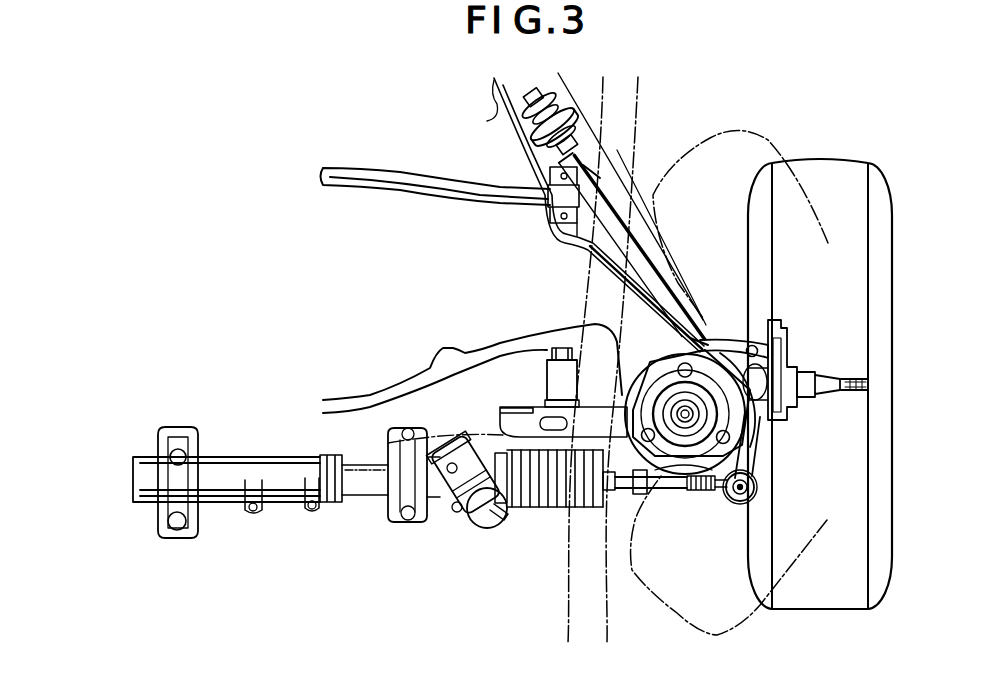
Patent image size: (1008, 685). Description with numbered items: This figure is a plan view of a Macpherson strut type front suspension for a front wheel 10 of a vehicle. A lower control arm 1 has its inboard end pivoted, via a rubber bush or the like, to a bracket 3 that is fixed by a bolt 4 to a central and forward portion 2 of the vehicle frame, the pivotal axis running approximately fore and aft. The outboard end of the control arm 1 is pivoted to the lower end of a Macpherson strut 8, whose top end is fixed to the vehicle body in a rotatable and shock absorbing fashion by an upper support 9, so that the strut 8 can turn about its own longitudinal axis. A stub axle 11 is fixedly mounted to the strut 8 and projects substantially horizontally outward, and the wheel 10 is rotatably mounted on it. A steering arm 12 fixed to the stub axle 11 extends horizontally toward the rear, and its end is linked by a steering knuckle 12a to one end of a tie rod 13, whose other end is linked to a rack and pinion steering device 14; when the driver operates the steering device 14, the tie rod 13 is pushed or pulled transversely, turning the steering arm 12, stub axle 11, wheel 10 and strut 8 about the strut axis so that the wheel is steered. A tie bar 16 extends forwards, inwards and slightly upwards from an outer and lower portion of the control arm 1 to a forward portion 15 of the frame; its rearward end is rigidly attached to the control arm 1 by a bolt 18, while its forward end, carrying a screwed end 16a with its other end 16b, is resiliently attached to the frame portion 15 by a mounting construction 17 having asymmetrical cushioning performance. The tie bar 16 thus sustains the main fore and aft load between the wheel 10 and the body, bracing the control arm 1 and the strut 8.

The lower control arm 1 is at (623, 521).
The central and forward portion of the frame 2 is at (368, 393).
The bracket 3 is at (576, 348).
The bolt 4 is at (557, 347).
The Macpherson strut 8 is at (730, 488).
The upper support 9 is at (742, 436).
The front wheel 10 is at (835, 158).
The stub axle 11 is at (822, 372).
The steering arm 12 is at (757, 457).
The steering knuckle 12a is at (752, 497).
The tie rod 13 is at (667, 488).
The rack and pinion steering device 14 is at (291, 515).
The forward portion of the frame 15 is at (487, 121).
The tie bar 16 is at (650, 255).
The screwed end of the tie bar 16a is at (590, 173).
The strut lower end 16b is at (698, 337).
The mounting construction 17 is at (577, 118).
The bolt 18 is at (722, 355).